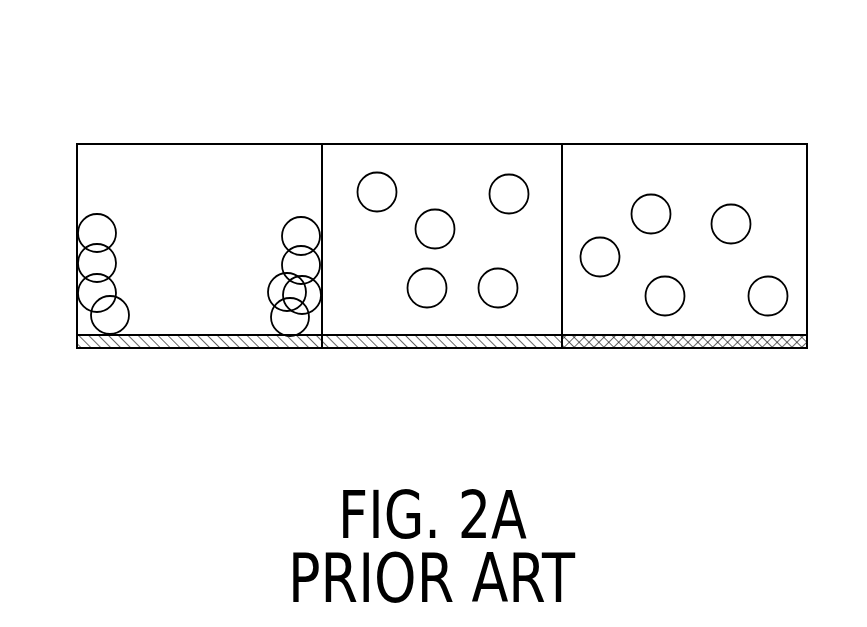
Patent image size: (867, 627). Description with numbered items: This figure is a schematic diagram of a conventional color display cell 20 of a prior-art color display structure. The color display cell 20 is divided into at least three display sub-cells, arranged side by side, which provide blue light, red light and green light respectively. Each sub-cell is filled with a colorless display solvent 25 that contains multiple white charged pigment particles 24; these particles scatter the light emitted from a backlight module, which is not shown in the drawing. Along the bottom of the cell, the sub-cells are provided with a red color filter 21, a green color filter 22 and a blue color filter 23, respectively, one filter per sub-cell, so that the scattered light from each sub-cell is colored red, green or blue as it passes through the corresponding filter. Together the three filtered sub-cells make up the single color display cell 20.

The color display cell 20 is at (442, 31).
The red color filter 21 is at (188, 348).
The green color filter 22 is at (435, 350).
The blue color filter 23 is at (657, 350).
The white charged pigment particles 24 is at (93, 230).
The colorless display solvent 25 is at (187, 173).